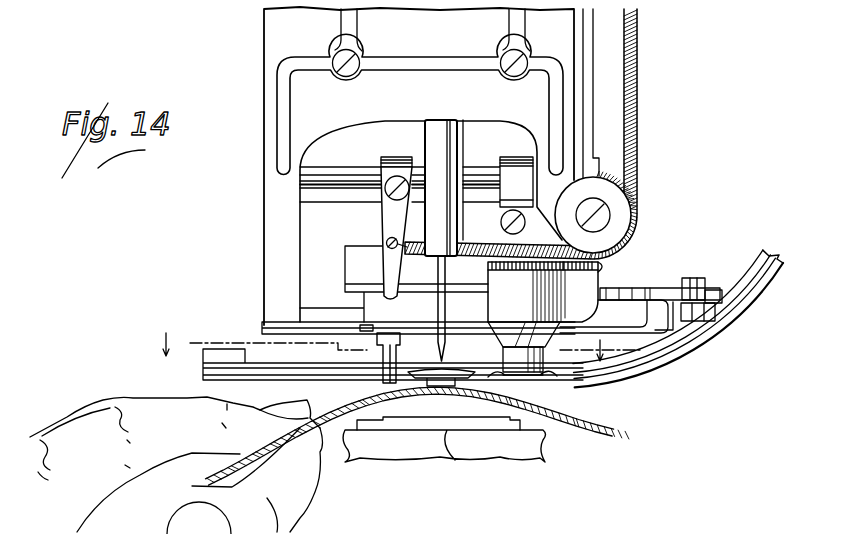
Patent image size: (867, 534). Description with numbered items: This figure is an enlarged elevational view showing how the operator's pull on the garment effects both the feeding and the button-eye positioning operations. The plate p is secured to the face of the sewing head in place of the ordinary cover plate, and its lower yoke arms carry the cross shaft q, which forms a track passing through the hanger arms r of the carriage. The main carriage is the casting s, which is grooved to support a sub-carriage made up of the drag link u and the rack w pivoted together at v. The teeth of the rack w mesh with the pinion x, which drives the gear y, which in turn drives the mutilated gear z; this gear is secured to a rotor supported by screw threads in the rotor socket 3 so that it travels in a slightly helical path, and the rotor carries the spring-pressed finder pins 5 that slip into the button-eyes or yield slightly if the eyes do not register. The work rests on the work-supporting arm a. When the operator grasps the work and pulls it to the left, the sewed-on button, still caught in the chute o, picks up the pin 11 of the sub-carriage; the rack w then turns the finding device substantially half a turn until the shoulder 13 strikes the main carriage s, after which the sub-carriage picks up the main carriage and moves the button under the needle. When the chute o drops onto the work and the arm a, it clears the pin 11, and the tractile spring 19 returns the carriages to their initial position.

The plate p is at (282, 40).
The cross shaft q is at (330, 166).
The hanger arms r is at (503, 160).
The casting s is at (377, 223).
The tractile spring 19 is at (638, 183).
The mutilated gear z is at (519, 275).
The rotor socket 3 is at (553, 352).
The finder pins 5 is at (548, 374).
The gear y is at (593, 260).
The rack w is at (702, 279).
The drag link u is at (640, 334).
The shoulder 13 is at (673, 325).
The pivot v is at (770, 298).
The chute o is at (777, 266).
The pinion x is at (394, 336).
The pin 11 is at (380, 384).
The work-supporting arm a is at (447, 463).